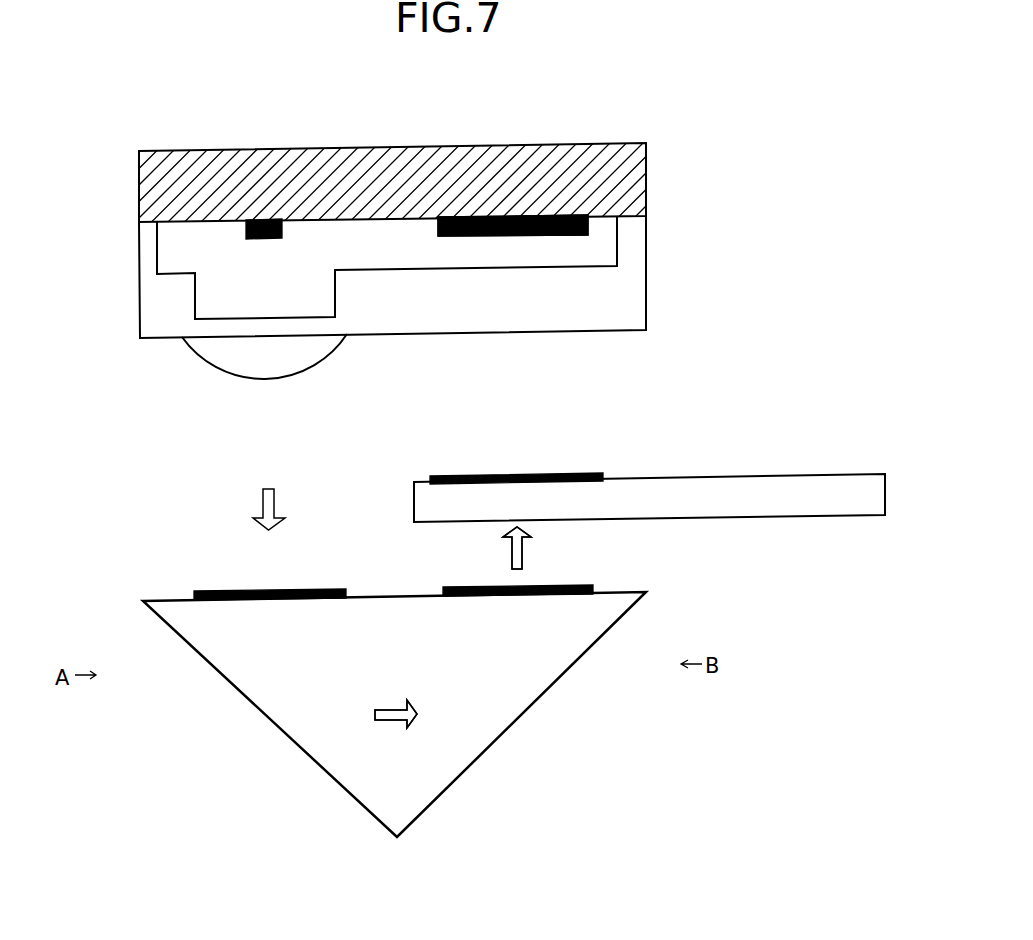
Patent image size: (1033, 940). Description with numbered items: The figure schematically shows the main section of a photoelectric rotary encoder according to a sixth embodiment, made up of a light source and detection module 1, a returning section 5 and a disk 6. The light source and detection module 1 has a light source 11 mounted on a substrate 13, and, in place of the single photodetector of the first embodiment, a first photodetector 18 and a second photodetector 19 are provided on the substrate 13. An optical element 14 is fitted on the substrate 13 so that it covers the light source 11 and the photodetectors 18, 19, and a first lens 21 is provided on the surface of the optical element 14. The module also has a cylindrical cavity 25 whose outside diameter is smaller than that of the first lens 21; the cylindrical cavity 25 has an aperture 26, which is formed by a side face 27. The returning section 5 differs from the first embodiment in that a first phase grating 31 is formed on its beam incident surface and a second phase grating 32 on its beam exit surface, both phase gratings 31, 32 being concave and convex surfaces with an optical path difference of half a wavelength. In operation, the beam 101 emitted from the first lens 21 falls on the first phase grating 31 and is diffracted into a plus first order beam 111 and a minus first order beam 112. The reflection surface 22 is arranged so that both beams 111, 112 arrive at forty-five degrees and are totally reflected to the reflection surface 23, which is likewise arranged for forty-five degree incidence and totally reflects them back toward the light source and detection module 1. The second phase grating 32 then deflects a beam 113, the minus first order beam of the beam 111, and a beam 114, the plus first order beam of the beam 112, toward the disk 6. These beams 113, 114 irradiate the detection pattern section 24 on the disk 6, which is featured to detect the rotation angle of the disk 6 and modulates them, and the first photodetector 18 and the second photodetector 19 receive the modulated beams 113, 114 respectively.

The light source and detection module 1 is at (145, 188).
The light source 11 is at (264, 219).
The substrate 13 is at (449, 183).
The optical element 14 is at (158, 295).
The first photodetector 18 is at (558, 233).
The second photodetector 19 is at (513, 225).
The first lens 21 is at (257, 367).
The cylindrical cavity 25 is at (308, 280).
The aperture 26 is at (296, 319).
The side face 27 is at (337, 303).
The returning section 5 is at (225, 667).
The disk 6 is at (677, 485).
The reflection surface 22 is at (282, 733).
The reflection surface 23 is at (547, 688).
The detection pattern section 24 is at (512, 477).
The first phase grating 31 is at (218, 590).
The second phase grating 32 is at (458, 584).
The beam 101 is at (262, 505).
The plus first order beam 111 is at (397, 722).
The minus first order beam 112 is at (396, 714).
The beam 113 is at (518, 553).
The beam 114 is at (517, 548).